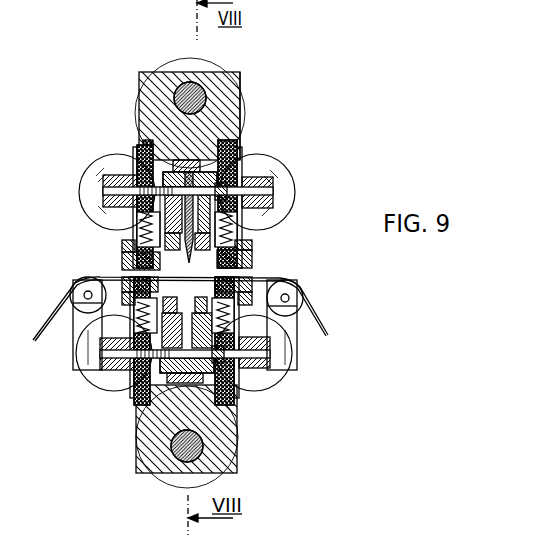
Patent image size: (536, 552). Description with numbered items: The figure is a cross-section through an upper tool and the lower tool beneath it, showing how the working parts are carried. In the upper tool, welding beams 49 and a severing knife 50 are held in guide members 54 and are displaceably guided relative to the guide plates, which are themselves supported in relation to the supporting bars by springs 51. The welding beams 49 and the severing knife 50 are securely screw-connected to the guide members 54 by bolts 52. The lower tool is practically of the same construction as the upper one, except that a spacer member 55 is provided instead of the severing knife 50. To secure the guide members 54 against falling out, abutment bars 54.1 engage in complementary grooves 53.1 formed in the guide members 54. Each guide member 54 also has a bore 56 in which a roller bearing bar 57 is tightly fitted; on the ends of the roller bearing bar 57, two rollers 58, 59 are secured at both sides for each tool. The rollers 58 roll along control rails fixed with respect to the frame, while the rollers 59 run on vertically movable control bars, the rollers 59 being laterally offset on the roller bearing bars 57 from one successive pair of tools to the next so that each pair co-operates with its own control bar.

The welding beams 49 is at (137, 230).
The severing knife 50 is at (125, 258).
The springs 51 is at (247, 253).
The bolts 52 is at (260, 183).
The grooves 53.1 is at (165, 147).
The guide members 54 is at (240, 115).
The abutment bars 54.1 is at (230, 147).
The spacer member 55 is at (230, 338).
The bores 56 is at (240, 87).
The roller bearing bars 57 is at (177, 98).
The rollers 58 is at (190, 272).
The rollers 59 is at (200, 63).